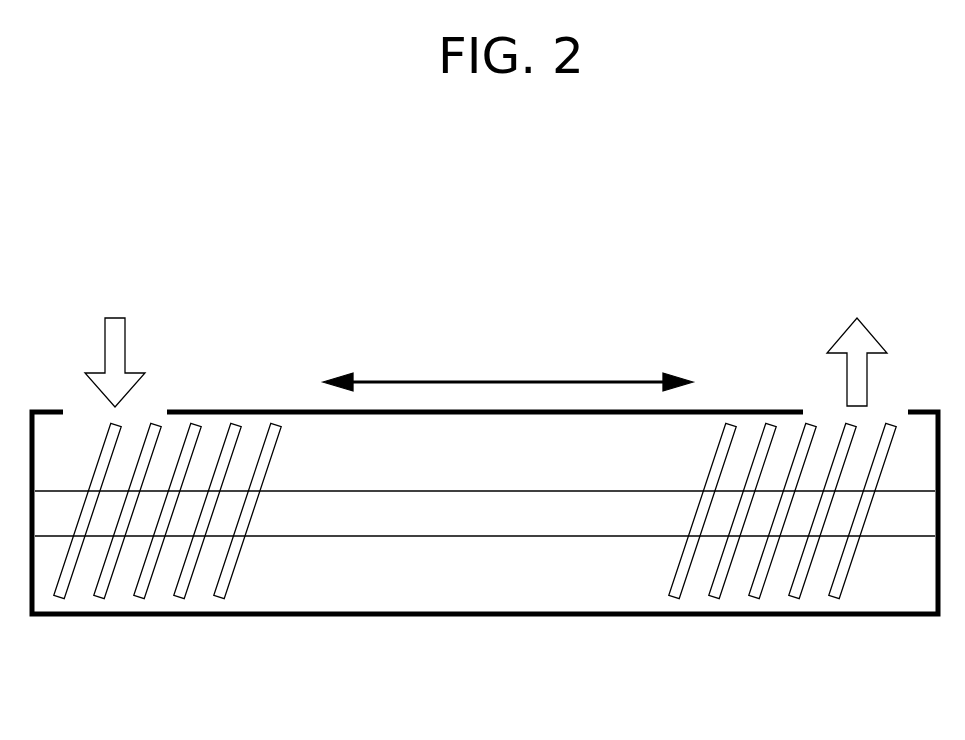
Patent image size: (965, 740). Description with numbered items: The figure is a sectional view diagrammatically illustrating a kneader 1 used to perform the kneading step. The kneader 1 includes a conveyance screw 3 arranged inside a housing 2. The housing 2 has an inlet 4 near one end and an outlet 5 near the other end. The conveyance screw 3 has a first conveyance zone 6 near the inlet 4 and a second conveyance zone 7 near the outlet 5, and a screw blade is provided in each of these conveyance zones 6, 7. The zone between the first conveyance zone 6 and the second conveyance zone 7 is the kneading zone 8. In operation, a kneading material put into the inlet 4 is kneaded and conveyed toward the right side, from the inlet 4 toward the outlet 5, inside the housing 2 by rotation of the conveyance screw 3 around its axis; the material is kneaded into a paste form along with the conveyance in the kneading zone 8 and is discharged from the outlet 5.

The kneader 1 is at (748, 272).
The housing 2 is at (563, 617).
The conveyance screw 3 is at (447, 520).
The inlet 4 is at (144, 413).
The outlet 5 is at (884, 413).
The first conveyance zone 6 is at (240, 558).
The second conveyance zone 7 is at (850, 572).
The kneading zone 8 is at (508, 370).